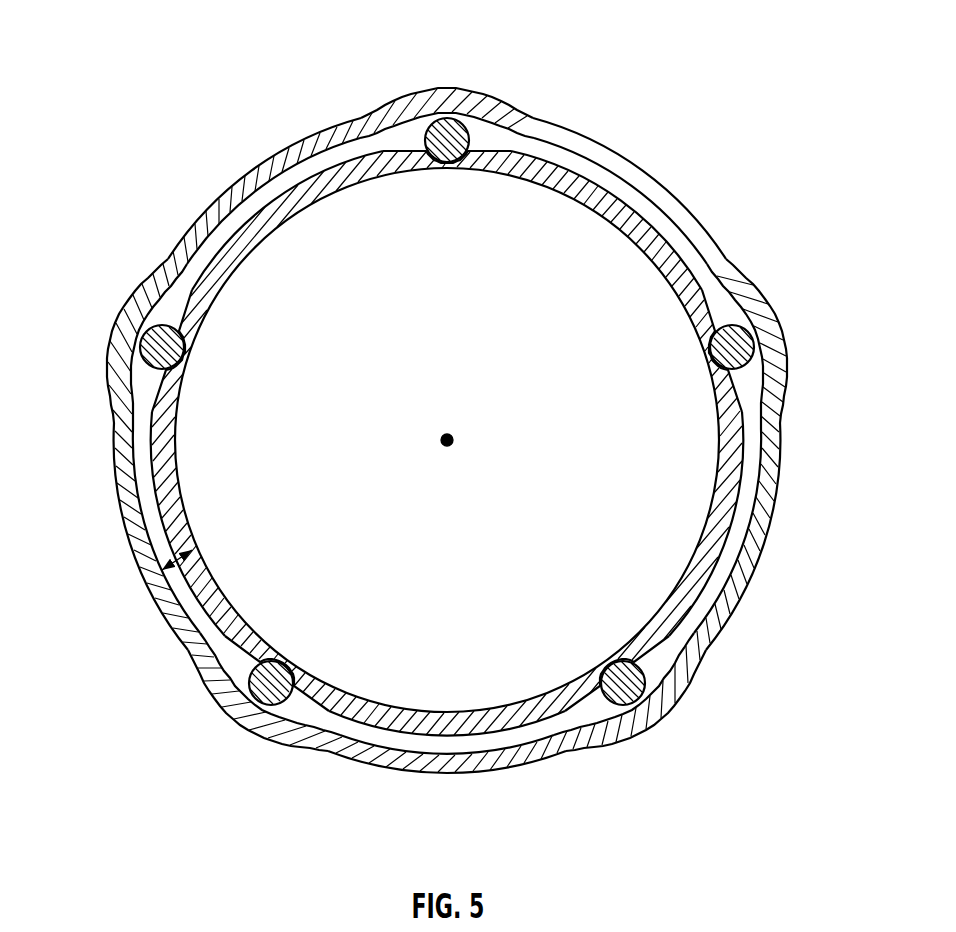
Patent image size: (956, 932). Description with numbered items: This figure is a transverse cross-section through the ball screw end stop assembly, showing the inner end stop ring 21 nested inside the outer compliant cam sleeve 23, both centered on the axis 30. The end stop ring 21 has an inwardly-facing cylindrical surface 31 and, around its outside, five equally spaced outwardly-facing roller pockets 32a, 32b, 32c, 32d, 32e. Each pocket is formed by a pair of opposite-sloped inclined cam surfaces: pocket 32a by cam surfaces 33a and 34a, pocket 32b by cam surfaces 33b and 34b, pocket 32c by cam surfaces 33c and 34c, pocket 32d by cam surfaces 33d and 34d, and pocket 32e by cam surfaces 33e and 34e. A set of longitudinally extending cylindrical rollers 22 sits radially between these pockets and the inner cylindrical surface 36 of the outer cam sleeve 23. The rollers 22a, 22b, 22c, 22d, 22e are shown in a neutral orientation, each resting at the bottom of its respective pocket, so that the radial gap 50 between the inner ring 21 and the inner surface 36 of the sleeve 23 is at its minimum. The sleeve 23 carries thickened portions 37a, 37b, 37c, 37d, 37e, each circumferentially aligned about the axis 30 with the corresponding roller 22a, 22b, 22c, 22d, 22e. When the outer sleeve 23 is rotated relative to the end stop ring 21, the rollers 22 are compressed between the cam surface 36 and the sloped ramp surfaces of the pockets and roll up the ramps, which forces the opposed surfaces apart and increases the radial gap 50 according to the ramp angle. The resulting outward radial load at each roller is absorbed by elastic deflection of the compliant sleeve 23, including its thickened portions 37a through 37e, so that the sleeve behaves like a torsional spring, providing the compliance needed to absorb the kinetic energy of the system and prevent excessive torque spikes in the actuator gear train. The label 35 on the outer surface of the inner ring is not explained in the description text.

The inner end stop ring 21 is at (449, 402).
The cylindrical rollers 22 is at (447, 364).
The roller 22a is at (728, 350).
The roller 22b is at (620, 675).
The roller 22c is at (267, 677).
The roller 22d is at (167, 343).
The roller 22e is at (445, 130).
The outer compliant cam sleeve 23 is at (449, 402).
The axis 30 is at (451, 431).
The inwardly-facing cylindrical surface 31 is at (439, 420).
The cam pocket 32a is at (772, 308).
The cam pocket 32b is at (664, 716).
The cam pocket 32c is at (221, 707).
The cam pocket 32d is at (115, 344).
The cam pocket 32e is at (500, 103).
The cam surface 33a is at (772, 308).
The cam surface 33b is at (664, 716).
The cam surface 33c is at (238, 715).
The cam surface 33d is at (115, 344).
The cam surface 33e is at (500, 103).
The cam surface 34a is at (740, 395).
The cam surface 34b is at (583, 698).
The cam surface 34c is at (240, 650).
The cam surface 34d is at (185, 308).
The cam surface 34e is at (497, 148).
The outer surface of inner ring 35 is at (157, 505).
The inner cylindrical surface 36 is at (476, 118).
The thickened portion 37a is at (785, 323).
The thickened portion 37b is at (662, 732).
The thickened portion 37c is at (228, 730).
The thickened portion 37d is at (110, 322).
The thickened portion 37e is at (467, 80).
The radial gap 50 is at (172, 563).